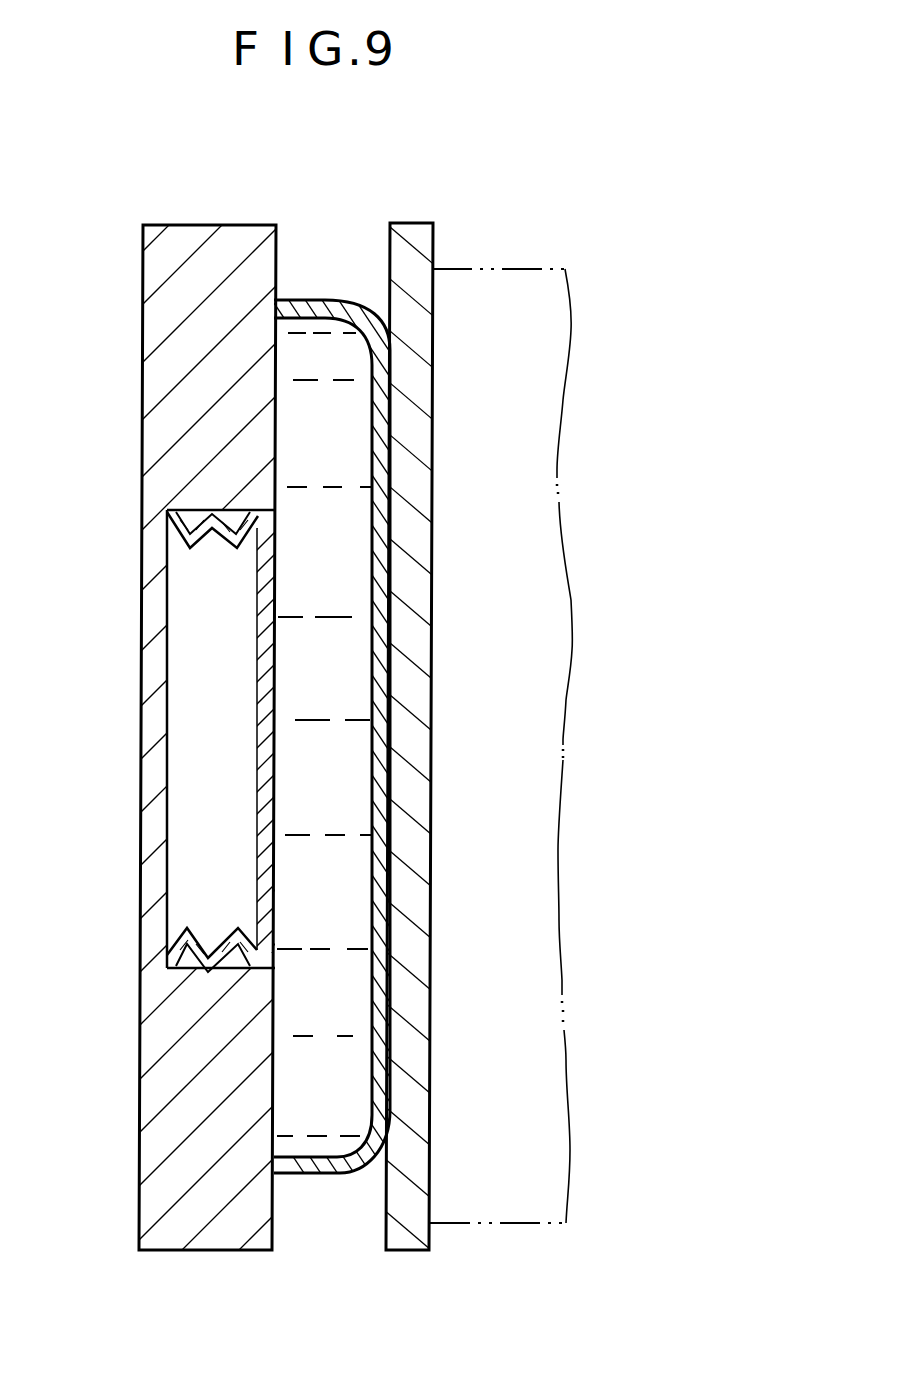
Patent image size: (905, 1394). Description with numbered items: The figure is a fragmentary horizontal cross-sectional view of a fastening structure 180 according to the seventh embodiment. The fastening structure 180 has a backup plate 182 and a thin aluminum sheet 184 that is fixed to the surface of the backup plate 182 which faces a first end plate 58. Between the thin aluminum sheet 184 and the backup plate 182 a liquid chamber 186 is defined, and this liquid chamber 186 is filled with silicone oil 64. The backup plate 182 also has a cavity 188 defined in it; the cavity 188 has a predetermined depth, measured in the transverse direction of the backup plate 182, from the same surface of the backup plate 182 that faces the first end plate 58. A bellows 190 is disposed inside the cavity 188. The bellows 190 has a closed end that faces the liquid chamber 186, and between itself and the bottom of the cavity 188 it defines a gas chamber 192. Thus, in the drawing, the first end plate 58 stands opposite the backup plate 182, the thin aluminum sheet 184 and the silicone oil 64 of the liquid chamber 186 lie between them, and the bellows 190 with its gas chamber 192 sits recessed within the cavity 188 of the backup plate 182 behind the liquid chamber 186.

The fastening structure 180 is at (432, 152).
The backup plate 182 is at (163, 437).
The thin aluminum sheet 184 is at (302, 300).
The liquid chamber 186 is at (314, 1078).
The cavity 188 is at (183, 525).
The bellows 190 is at (178, 945).
The gas chamber 192 is at (193, 615).
The silicone oil 64 is at (298, 418).
The first end plate 58 is at (444, 257).